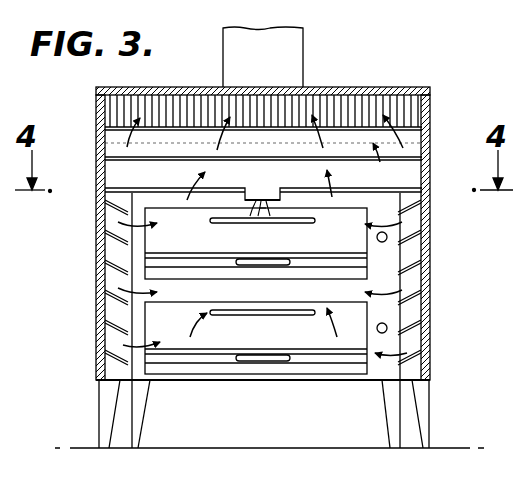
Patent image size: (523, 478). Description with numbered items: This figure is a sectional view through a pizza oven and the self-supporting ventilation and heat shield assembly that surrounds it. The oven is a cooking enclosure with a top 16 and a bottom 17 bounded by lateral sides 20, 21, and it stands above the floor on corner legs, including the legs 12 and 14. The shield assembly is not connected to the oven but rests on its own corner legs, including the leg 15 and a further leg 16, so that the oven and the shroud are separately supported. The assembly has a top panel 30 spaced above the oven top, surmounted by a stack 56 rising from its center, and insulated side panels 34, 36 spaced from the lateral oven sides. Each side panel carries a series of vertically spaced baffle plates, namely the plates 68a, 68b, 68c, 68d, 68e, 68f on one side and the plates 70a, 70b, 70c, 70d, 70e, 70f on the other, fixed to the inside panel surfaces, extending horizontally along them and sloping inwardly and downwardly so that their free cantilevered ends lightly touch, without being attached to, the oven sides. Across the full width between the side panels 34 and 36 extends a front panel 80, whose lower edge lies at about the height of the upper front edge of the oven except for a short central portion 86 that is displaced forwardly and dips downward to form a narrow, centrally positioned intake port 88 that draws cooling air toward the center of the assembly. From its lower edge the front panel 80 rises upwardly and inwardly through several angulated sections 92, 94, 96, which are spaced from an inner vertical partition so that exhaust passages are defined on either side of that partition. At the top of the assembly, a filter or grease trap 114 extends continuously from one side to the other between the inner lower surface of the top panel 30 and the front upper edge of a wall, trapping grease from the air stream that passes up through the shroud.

The leg 12 is at (383, 410).
The leg 14 is at (142, 420).
The corner leg 15 is at (99, 407).
The top 16 is at (430, 407).
The bottom 17 is at (219, 384).
The lateral side 20 is at (105, 318).
The lateral side 21 is at (412, 312).
The top panel 30 is at (333, 87).
The side panel 34 is at (97, 178).
The side panel 36 is at (430, 192).
The flue 56 is at (303, 48).
The baffle plate 68a is at (105, 210).
The baffle plate 68b is at (105, 240).
The baffle plate 68c is at (105, 272).
The baffle plate 68d is at (105, 300).
The baffle plate 68e is at (105, 333).
The baffle plate 68f is at (105, 363).
The baffle plate 70a is at (425, 208).
The baffle plate 70b is at (425, 238).
The baffle plate 70c is at (425, 268).
The baffle plate 70d is at (425, 298).
The baffle plate 70e is at (425, 333).
The baffle plate 70f is at (425, 360).
The front panel 80 is at (415, 173).
The central portion 86 is at (270, 193).
The intake port 88 is at (258, 217).
The angulated section 92 is at (430, 160).
The angulated section 94 is at (430, 143).
The angulated section 96 is at (430, 127).
The filter or grease trap 114 is at (377, 100).